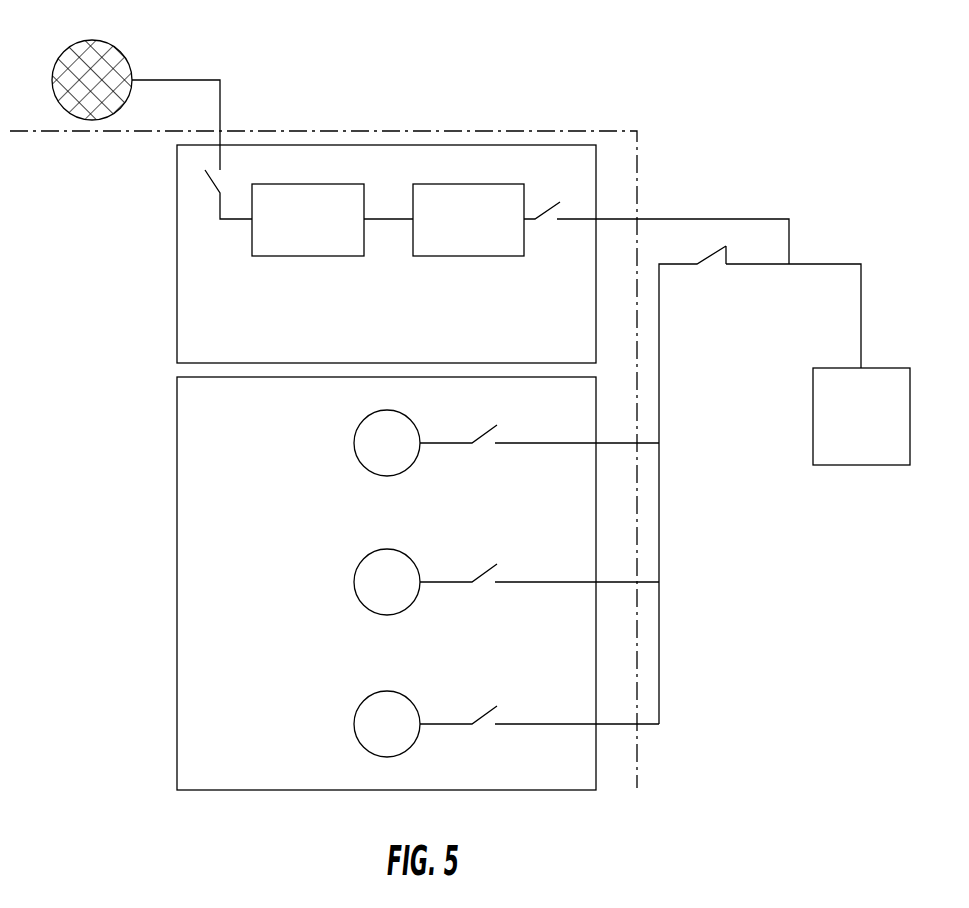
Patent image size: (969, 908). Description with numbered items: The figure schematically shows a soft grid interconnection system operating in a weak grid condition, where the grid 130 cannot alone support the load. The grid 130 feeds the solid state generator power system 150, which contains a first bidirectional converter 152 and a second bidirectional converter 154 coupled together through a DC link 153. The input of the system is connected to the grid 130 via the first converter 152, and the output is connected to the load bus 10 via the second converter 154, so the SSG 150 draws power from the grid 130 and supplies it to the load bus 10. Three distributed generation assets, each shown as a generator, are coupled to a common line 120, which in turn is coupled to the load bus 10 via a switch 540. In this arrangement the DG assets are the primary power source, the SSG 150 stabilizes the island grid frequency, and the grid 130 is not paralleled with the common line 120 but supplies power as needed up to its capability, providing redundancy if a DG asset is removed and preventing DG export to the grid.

The load bus 10 is at (821, 240).
The common line 120 is at (468, 583).
The grid 130 is at (151, 79).
The solid state generator power system 150 is at (471, 256).
The first bidirectional converter 152 is at (305, 256).
The DC link 153 is at (386, 220).
The second bidirectional converter 154 is at (466, 256).
The switch 540 is at (700, 298).